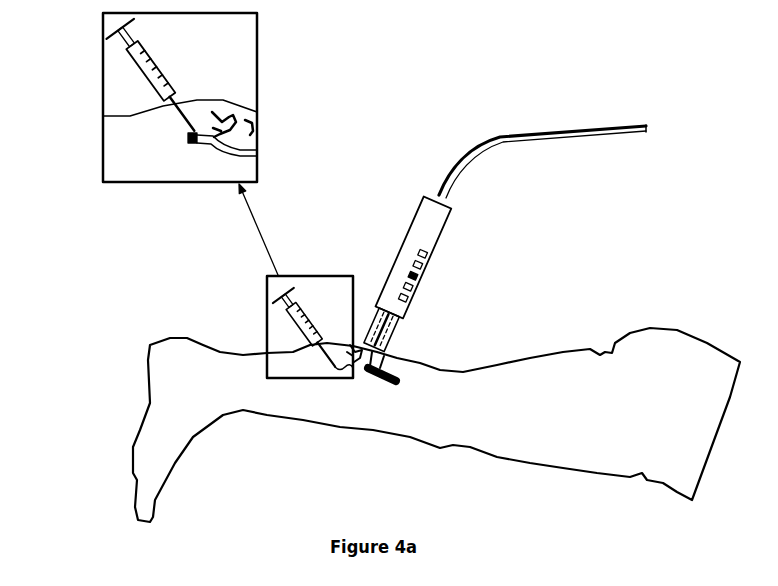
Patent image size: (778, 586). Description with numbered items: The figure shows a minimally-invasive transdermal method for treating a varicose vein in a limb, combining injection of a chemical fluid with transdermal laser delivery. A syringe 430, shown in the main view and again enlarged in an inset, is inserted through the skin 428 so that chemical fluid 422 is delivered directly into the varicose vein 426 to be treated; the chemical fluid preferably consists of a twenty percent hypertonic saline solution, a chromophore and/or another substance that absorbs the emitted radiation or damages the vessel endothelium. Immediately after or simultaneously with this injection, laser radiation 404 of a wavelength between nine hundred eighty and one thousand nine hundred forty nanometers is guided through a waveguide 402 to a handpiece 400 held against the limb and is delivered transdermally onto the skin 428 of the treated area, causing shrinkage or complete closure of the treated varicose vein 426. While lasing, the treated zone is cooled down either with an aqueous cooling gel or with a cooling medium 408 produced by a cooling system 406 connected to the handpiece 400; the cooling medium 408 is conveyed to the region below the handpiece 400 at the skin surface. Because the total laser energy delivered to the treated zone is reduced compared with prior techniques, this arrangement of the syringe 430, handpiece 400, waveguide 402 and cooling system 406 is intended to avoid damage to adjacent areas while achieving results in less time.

The handpiece 400 is at (457, 235).
The waveguide 402 is at (546, 164).
The laser radiation 404 is at (394, 334).
The cooling system 406 is at (542, 150).
The cooling medium 408 is at (367, 321).
The chemical fluid 422 is at (242, 145).
The varicose vein 426 is at (237, 112).
The skin 428 is at (134, 106).
The syringe 430 is at (137, 68).